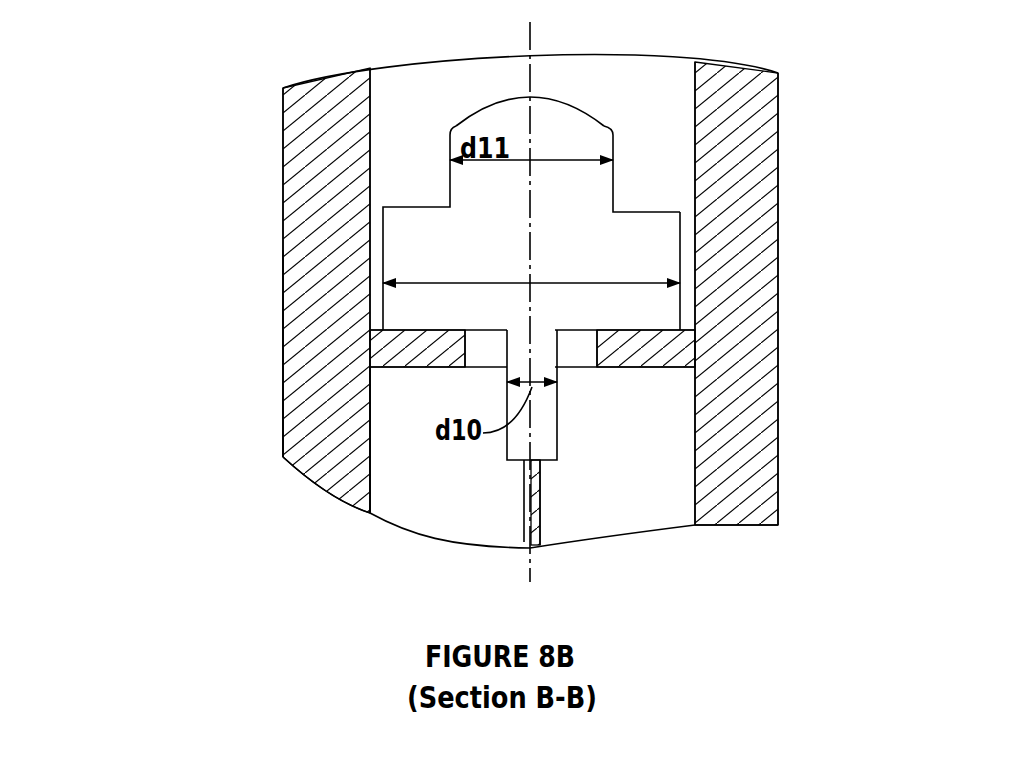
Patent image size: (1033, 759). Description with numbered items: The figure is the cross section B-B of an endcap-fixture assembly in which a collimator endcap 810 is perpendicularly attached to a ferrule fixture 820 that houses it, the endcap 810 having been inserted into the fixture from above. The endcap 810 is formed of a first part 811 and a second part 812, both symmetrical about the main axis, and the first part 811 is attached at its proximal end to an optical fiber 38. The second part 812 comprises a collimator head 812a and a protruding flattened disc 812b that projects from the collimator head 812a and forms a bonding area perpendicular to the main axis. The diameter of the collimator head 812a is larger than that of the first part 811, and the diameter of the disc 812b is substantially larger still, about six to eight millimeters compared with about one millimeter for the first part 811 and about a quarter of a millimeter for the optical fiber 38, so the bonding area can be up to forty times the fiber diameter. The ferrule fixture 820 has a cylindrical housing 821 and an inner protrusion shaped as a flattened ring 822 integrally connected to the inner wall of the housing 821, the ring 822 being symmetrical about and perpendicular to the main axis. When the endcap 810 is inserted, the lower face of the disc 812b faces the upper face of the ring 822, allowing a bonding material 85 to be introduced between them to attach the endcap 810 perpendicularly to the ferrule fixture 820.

The ferrule fixture 820 is at (283, 170).
The flattened ring 822 is at (312, 272).
The collimator head 812a is at (457, 128).
The collimator endcap 810 is at (560, 97).
The second part 812 is at (617, 187).
The protruding flattened disc 812b is at (658, 263).
The bonding material 85 is at (633, 332).
The housing 821 is at (412, 355).
The first part 811 is at (555, 427).
The optical fiber 38 is at (540, 500).